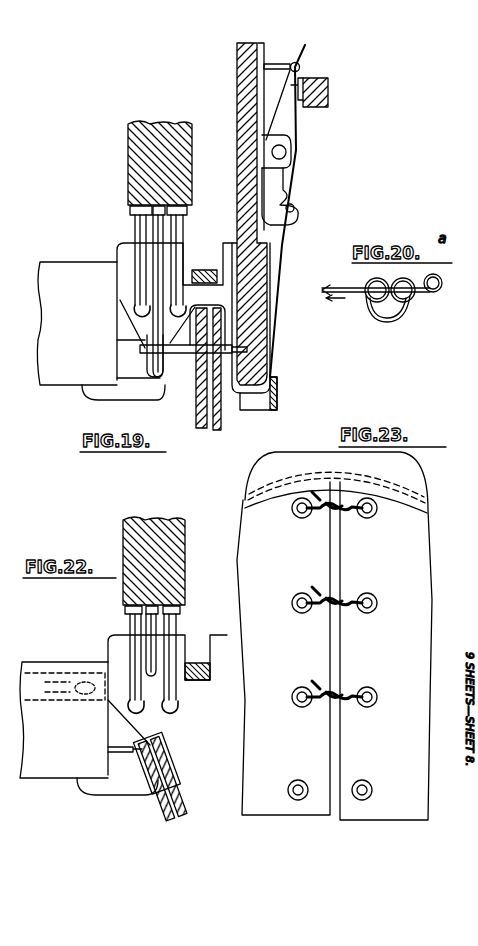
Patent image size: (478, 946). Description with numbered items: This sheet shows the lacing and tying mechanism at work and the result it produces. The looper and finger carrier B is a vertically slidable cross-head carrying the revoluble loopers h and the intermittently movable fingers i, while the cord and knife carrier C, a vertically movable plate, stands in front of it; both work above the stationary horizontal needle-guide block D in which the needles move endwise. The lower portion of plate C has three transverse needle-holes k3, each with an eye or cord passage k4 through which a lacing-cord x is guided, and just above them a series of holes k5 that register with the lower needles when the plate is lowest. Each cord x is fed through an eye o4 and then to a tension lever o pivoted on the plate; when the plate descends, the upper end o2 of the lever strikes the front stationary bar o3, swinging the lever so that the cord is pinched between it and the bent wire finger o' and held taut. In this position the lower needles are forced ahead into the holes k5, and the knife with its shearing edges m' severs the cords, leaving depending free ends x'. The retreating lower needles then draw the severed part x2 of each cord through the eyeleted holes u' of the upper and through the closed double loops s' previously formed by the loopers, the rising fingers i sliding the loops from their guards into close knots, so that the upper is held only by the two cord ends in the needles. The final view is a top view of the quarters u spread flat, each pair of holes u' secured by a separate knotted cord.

In FIG. 19, the looper and finger carrier B is at (128, 120).
In FIG. 22, the looper and finger carrier B is at (83, 522).
In FIG. 19, the cord and knife carrier C is at (237, 103).
In FIG. 19, the loopers h is at (133, 226).
In FIG. 19, the fingers i is at (158, 256).
In FIG. 19, the needle-guide block D is at (77, 323).
In FIG. 22, the needle-guide block D is at (10, 648).
In FIG. 19, the closed loops s' is at (193, 349).
In FIG. 20a, the closed loops s' is at (403, 294).
In FIG. 19, the quarters or flaps of the shoe-upper u is at (220, 383).
In FIG. 23, the quarters or flaps of the shoe-upper u is at (334, 636).
In FIG. 19, the eyeleted holes u' is at (185, 385).
In FIG. 23, the eyeleted holes u' is at (343, 646).
In FIG. 19, the cutting or shearing edges m' is at (203, 398).
In FIG. 19, the tension or cord-controlling levers o is at (298, 147).
In FIG. 19, the bent wire or finger o' is at (309, 210).
In FIG. 19, the upper end of tension lever o2 is at (312, 79).
In FIG. 19, the front stationary bar o3 is at (328, 95).
In FIG. 19, the eye or guide o4 is at (280, 64).
In FIG. 19, the lacing-cord x is at (293, 211).
In FIG. 20a, the depending free ends of the cords x' is at (376, 281).
In FIG. 20a, the severed part of the cord x2 is at (320, 291).
In FIG. 22, the severed part of the cord x2 is at (140, 752).
In FIG. 19, the transverse needle-holes k3 is at (280, 395).
In FIG. 19, the eye or cord passage k4 is at (273, 377).
In FIG. 19, the upper series of holes k5 is at (250, 347).